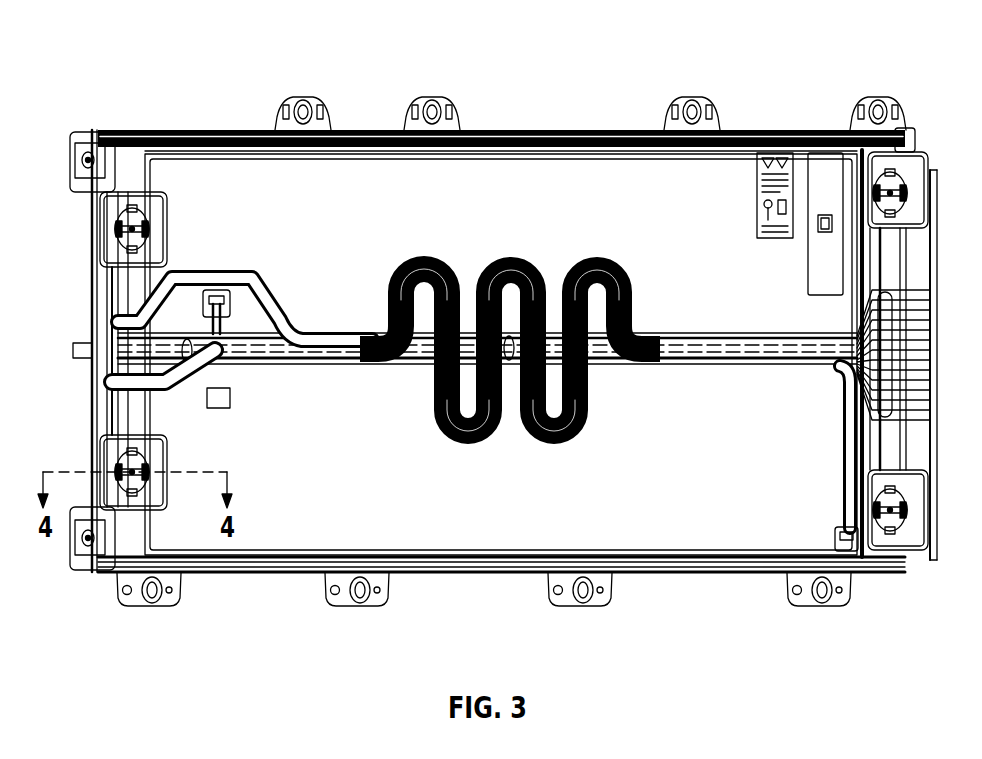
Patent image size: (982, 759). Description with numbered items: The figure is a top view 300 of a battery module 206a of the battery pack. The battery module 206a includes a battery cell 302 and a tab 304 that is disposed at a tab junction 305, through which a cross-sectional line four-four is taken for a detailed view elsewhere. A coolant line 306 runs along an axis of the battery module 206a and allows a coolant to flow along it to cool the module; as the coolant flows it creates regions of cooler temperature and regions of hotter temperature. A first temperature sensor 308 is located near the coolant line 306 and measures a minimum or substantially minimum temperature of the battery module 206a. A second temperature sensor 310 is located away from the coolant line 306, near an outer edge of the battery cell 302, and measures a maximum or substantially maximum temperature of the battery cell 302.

The top view 300 is at (857, 54).
The battery module 206a is at (570, 128).
The battery cell 302 is at (447, 533).
The tab 304 is at (116, 470).
The tab junction 305 is at (157, 482).
The coolant line 306 is at (392, 300).
The first temperature sensor 308 is at (217, 290).
The second temperature sensor 310 is at (847, 549).